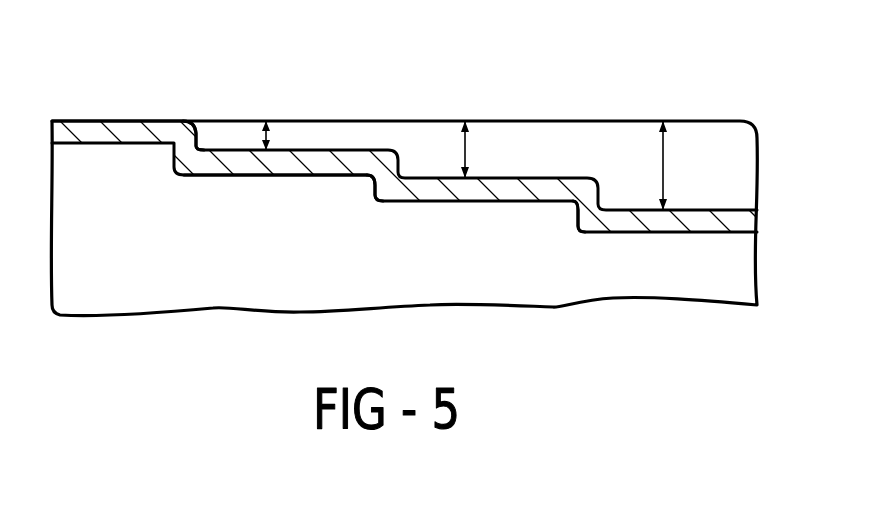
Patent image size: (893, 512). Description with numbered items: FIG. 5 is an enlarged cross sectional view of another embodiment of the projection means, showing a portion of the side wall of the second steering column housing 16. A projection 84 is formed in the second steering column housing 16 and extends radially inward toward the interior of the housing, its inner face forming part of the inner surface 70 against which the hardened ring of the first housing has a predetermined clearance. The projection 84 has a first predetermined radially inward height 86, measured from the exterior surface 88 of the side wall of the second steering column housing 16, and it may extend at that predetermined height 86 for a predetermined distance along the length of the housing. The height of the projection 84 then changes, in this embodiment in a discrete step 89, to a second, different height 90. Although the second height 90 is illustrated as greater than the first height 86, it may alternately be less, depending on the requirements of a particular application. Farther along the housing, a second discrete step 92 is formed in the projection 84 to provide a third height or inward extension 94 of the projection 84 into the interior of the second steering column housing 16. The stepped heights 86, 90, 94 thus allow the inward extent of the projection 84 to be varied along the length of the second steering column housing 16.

The second steering column housing 16 is at (389, 70).
The inner surface 70 is at (105, 120).
The projection 84 is at (230, 178).
The predetermined height 86 is at (268, 122).
The exterior surface 88 is at (180, 120).
The discrete step 89 is at (372, 187).
The second height 90 is at (468, 151).
The second discrete step 92 is at (577, 213).
The third height 94 is at (665, 163).